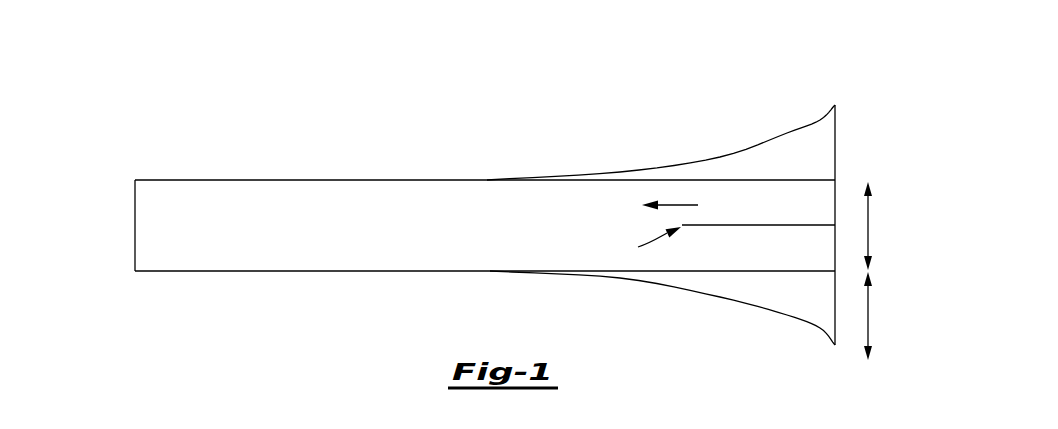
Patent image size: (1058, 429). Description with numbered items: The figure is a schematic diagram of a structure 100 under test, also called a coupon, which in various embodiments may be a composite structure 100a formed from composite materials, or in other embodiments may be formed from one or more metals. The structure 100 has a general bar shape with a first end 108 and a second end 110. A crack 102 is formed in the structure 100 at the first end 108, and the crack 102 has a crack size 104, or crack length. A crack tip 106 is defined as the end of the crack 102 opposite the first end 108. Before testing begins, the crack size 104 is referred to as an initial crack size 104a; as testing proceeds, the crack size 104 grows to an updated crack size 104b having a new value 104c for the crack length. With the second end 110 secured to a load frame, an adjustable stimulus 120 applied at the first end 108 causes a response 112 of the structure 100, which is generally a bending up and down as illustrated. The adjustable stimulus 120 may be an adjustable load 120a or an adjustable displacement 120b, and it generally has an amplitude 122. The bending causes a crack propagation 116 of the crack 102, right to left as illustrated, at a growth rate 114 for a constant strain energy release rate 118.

The structure 100 is at (485, 138).
The composite structure 100a is at (275, 180).
The crack 102 is at (744, 225).
The crack size 104 is at (666, 180).
The initial crack size 104a is at (666, 180).
The updated crack size 104b is at (666, 180).
The new value 104c is at (841, 79).
The crack tip 106 is at (642, 244).
The first end 108 is at (835, 192).
The second end 110 is at (135, 227).
The response 112 is at (883, 316).
The growth rate 114 is at (706, 204).
The crack propagation 116 is at (706, 204).
The constant strain energy release rate 118 is at (362, 247).
The adjustable stimulus 120 is at (912, 226).
The amplitude 122 is at (912, 226).
The adjustable load 120a is at (912, 226).
The adjustable displacement 120b is at (912, 226).